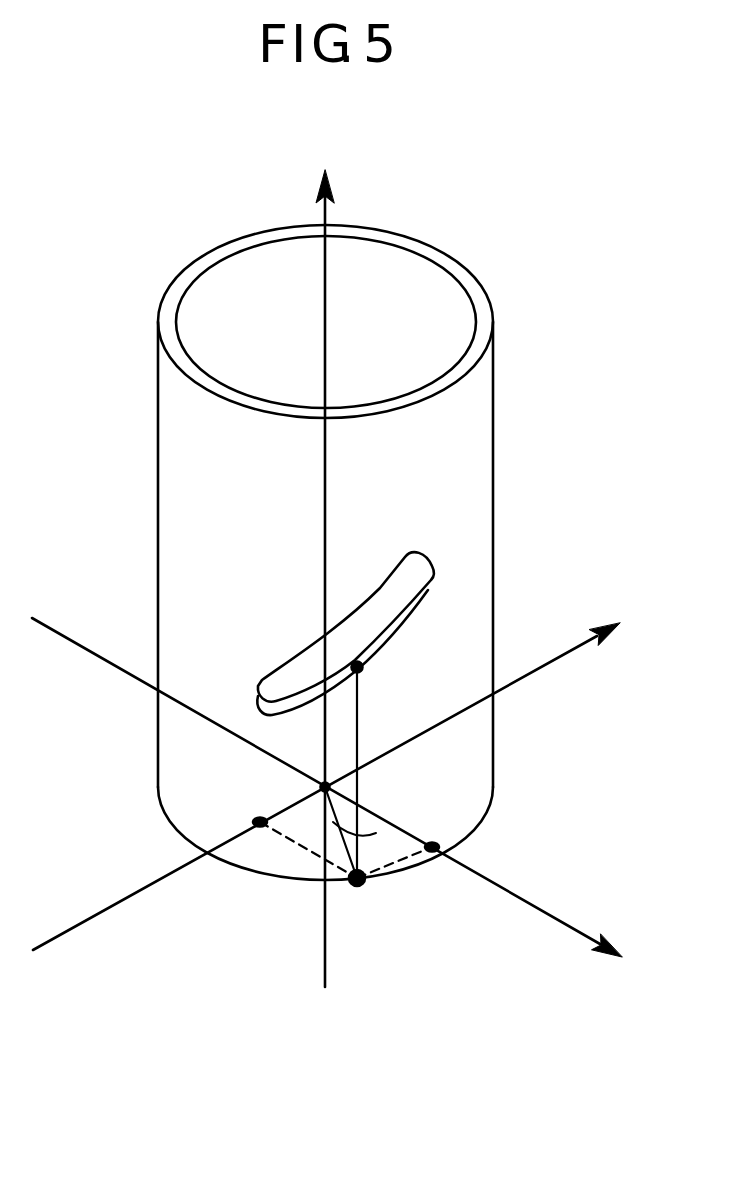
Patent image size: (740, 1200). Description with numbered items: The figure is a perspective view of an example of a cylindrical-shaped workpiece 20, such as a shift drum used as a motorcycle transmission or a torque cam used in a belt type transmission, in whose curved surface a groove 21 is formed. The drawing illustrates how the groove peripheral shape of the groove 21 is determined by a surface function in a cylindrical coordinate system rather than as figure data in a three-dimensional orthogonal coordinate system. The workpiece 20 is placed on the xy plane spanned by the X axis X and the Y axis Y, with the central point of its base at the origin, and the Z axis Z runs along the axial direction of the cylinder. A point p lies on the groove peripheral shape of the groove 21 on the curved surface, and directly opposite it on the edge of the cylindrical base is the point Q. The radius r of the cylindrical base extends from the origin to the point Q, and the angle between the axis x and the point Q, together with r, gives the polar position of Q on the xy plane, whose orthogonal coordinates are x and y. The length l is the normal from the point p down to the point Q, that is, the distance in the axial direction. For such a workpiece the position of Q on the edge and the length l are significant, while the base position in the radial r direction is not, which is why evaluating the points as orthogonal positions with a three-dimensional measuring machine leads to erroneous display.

The cylindrical-shaped workpiece 20 is at (493, 385).
The groove 21 is at (416, 600).
The point on the groove peripheral shape p is at (361, 668).
The point on the edge of the cylindrical shape base Q is at (362, 882).
The length of the normal from point p to point Q l is at (371, 772).
The radius of the cylindrical shape base r is at (333, 824).
The x coordinate x is at (437, 842).
The y coordinate y is at (258, 818).
The X axis X is at (349, 806).
The Y axis Y is at (345, 772).
The Z axis Z is at (325, 558).